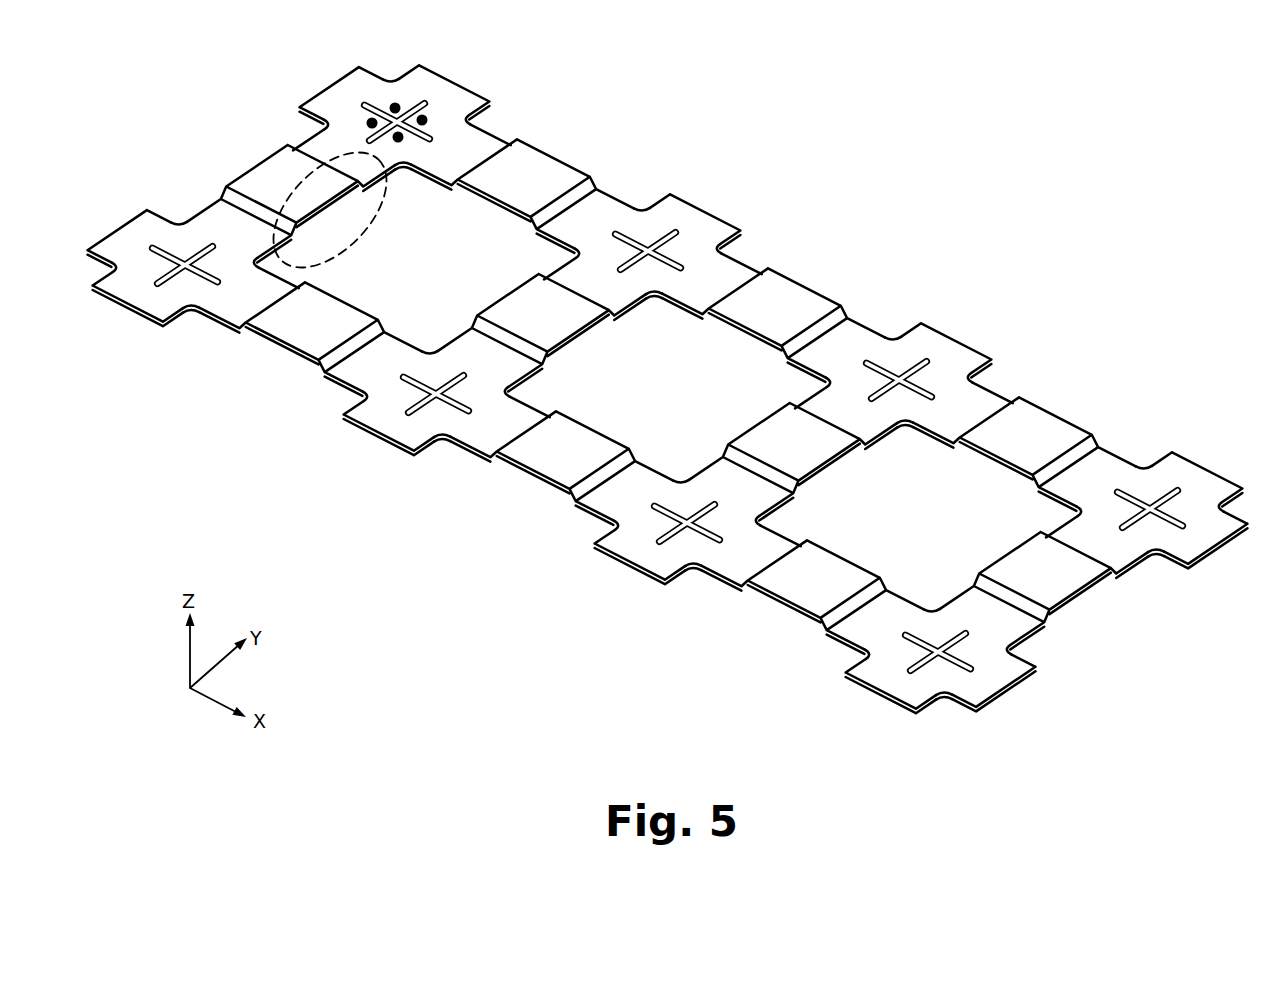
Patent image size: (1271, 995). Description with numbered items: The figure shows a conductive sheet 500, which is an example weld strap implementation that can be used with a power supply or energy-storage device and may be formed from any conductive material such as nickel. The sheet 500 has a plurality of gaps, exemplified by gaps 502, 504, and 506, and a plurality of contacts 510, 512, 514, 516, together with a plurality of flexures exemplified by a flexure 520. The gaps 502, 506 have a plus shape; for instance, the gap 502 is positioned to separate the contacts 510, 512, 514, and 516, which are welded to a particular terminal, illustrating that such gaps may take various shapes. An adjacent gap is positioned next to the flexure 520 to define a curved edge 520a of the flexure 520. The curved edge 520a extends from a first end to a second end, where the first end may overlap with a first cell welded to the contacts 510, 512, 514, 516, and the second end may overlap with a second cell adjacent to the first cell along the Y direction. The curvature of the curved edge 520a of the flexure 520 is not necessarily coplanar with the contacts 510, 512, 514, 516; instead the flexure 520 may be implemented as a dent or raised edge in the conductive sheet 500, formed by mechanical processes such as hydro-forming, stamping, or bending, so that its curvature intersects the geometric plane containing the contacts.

The conductive sheet 500 is at (152, 119).
The gap 502 is at (373, 112).
The gap 504 is at (410, 331).
The gap 506 is at (652, 271).
The contact 510 is at (368, 119).
The contact 512 is at (399, 143).
The contact 514 is at (396, 103).
The contact 516 is at (428, 118).
The flexure 520 is at (292, 178).
The curved edge 520a is at (348, 232).